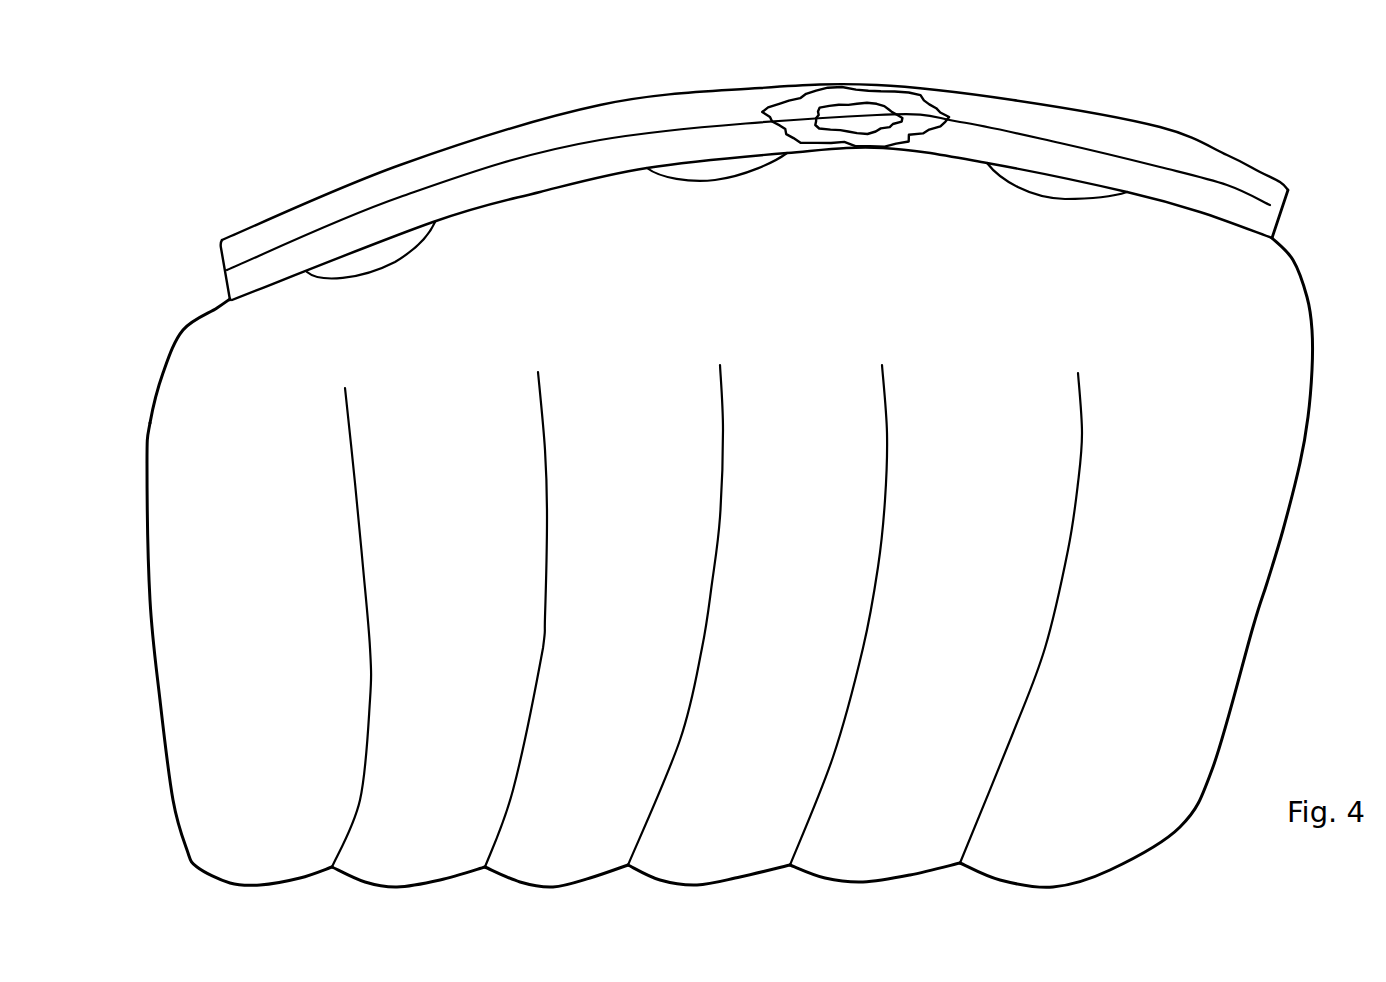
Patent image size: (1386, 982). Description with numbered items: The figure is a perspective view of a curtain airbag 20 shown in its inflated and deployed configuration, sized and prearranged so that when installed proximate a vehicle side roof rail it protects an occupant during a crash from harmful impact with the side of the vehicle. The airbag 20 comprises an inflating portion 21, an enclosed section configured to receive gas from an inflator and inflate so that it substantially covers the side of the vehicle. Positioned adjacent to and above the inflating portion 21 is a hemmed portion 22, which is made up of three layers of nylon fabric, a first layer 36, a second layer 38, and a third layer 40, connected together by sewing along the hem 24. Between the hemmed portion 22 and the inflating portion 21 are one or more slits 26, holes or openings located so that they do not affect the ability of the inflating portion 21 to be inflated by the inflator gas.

The curtain airbag 20 is at (1223, 590).
The inflating portion 21 is at (188, 388).
The hemmed portion 22 is at (1213, 160).
The hem 24 is at (412, 188).
The slits 26 is at (370, 260).
The first layer 36 is at (710, 100).
The second layer 38 is at (807, 110).
The third layer 40 is at (867, 112).